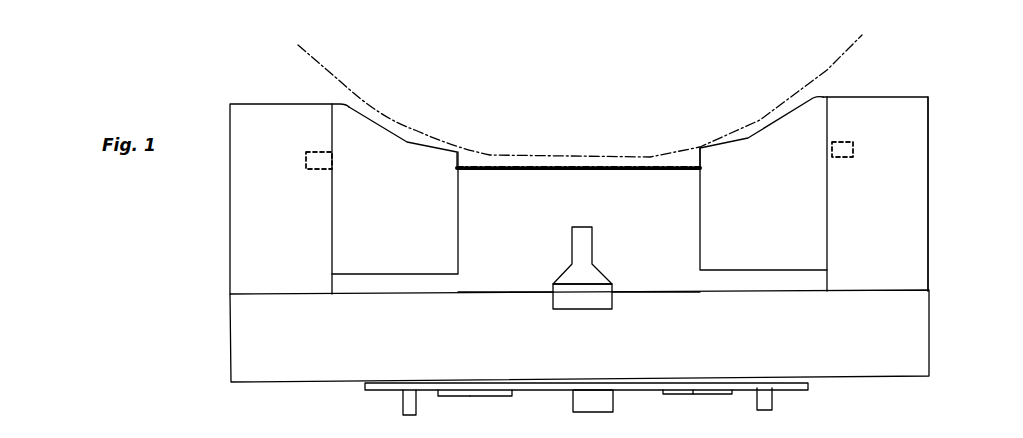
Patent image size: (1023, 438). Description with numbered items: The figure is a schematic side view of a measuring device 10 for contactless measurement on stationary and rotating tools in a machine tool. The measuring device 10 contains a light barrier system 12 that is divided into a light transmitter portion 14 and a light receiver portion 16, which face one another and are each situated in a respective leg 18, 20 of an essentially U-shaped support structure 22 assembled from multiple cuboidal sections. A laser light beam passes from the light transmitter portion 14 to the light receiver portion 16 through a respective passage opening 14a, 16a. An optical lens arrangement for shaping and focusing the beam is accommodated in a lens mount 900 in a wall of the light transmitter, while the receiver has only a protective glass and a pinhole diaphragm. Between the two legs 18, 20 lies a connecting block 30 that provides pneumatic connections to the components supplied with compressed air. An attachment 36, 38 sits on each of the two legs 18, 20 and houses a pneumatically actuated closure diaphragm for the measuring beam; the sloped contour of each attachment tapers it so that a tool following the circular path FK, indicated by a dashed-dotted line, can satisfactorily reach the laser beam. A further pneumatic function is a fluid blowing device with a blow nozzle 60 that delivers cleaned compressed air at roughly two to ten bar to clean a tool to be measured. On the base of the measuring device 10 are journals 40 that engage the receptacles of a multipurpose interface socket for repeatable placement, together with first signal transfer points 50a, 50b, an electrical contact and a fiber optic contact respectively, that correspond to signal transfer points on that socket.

The measuring device 10 is at (630, 91).
The light barrier system 12 is at (912, 82).
The light transmitter portion 14 is at (955, 184).
The passage opening 14a is at (828, 143).
The light receiver portion 16 is at (228, 209).
The passage opening 16a is at (333, 152).
The leg 18 is at (862, 151).
The leg 20 is at (303, 158).
The support structure 22 is at (637, 266).
The connecting block 30 is at (579, 336).
The attachment 36 is at (763, 209).
The attachment 38 is at (508, 137).
The journals 40 is at (400, 402).
The first signal transfer point 50a is at (476, 396).
The first signal transfer point 50b is at (521, 393).
The blow nozzle 60 is at (592, 250).
The lens mount 900 is at (315, 153).
The circular path FK is at (422, 136).